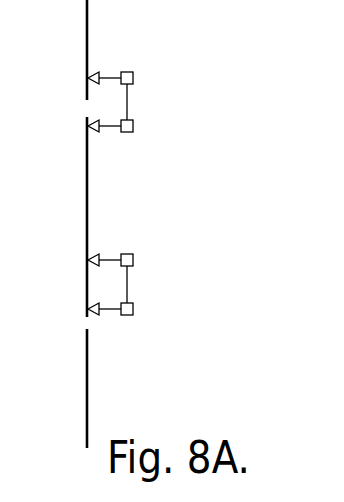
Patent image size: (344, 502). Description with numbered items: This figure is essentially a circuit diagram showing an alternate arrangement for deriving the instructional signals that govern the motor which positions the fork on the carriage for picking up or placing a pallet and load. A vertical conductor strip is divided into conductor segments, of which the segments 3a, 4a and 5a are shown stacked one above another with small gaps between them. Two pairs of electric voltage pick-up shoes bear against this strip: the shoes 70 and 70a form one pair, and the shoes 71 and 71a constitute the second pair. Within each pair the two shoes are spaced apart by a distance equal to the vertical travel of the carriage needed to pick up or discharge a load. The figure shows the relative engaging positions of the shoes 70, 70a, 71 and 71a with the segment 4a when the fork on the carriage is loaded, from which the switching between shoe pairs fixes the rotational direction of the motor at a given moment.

The conductor segment 5a is at (86, 33).
The conductor segment 4a is at (86, 203).
The conductor segment 3a is at (85, 390).
The electric voltage pick-up shoe 71a is at (91, 72).
The electric voltage pick-up shoe 71 is at (90, 130).
The electric voltage pickup shoe 70a is at (92, 255).
The electric voltage pickup shoe 70 is at (91, 314).